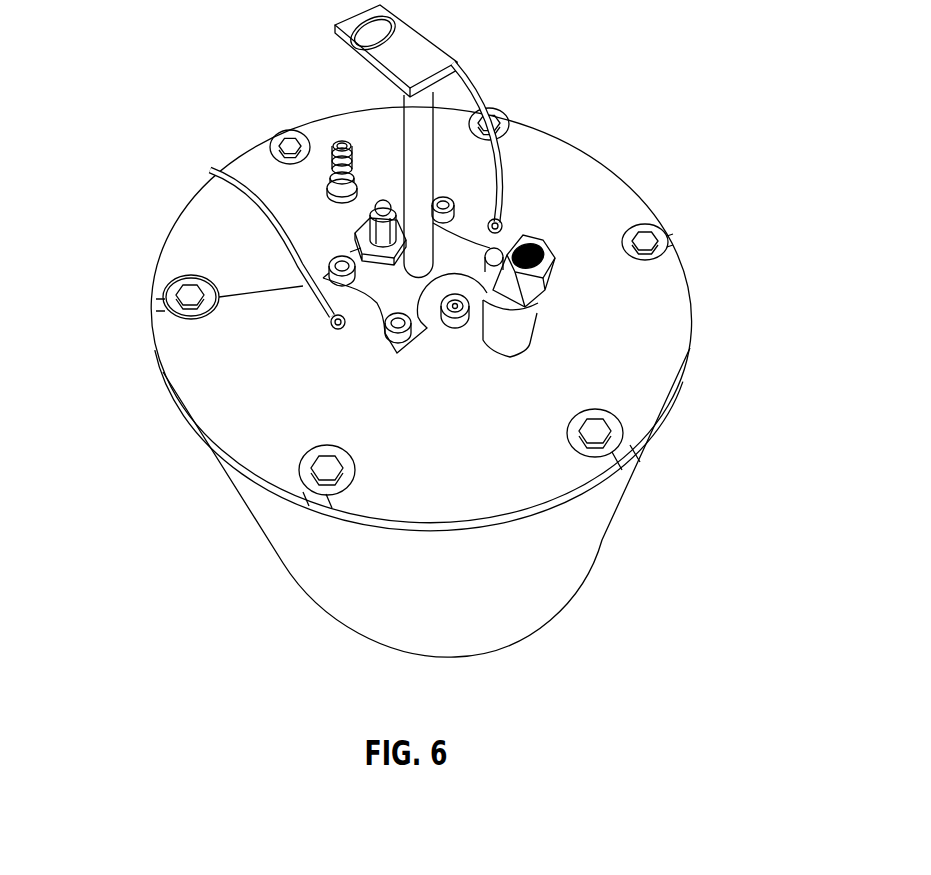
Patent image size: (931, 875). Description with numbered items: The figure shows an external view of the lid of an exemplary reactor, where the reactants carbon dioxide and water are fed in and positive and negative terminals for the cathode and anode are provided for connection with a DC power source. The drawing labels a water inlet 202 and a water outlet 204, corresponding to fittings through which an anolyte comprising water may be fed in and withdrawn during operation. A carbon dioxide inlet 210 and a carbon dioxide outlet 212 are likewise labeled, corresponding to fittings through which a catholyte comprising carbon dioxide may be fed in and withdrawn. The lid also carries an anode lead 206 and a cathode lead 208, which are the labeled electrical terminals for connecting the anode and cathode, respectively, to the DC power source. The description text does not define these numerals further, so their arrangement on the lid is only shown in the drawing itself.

The water inlet 202 is at (345, 231).
The water outlet 204 is at (455, 320).
The anode lead 206 is at (60, 403).
The cathode lead 208 is at (685, 94).
The CO2 inlet 210 is at (795, 293).
The CO2 outlet 212 is at (203, 37).